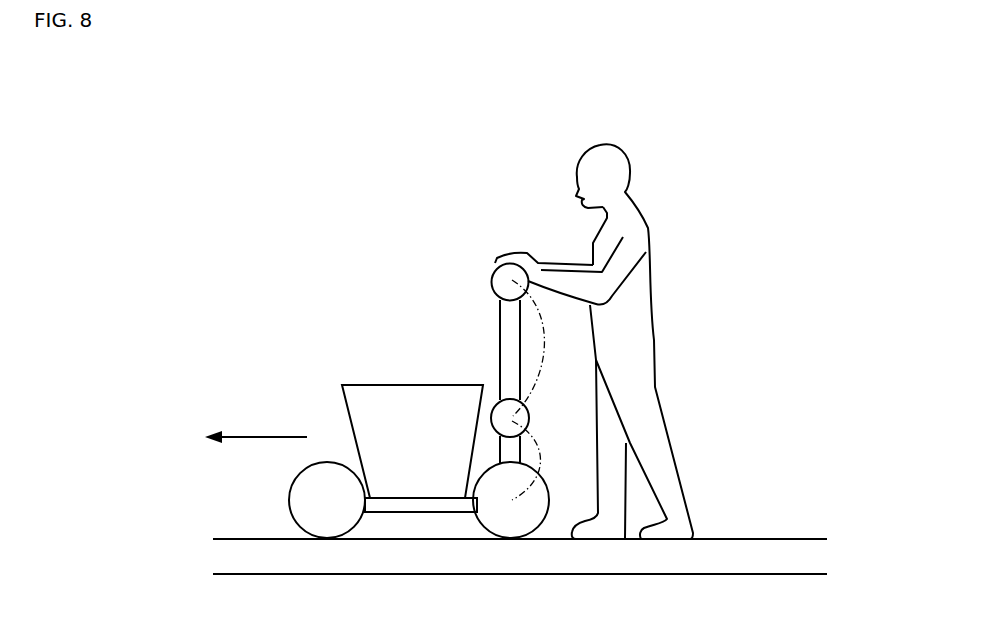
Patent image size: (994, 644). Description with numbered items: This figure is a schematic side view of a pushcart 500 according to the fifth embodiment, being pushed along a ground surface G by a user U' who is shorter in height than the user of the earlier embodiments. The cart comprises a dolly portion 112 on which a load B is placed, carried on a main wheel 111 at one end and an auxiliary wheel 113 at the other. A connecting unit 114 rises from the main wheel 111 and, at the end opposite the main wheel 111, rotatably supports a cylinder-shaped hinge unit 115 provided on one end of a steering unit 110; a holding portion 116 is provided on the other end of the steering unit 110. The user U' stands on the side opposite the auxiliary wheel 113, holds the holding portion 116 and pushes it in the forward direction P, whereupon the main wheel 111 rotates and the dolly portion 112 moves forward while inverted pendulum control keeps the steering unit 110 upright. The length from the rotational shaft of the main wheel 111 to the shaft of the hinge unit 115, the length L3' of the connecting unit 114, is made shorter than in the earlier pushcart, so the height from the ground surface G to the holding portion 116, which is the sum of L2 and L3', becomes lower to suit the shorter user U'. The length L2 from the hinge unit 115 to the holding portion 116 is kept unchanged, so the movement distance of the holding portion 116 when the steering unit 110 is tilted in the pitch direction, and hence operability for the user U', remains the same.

The pushcart 500 is at (327, 272).
The steering unit 110 is at (515, 322).
The main wheel 111 is at (514, 512).
The dolly portion 112 is at (382, 505).
The auxiliary wheel 113 is at (328, 518).
The connecting unit 114 is at (507, 455).
The hinge unit 115 is at (522, 415).
The holding portion 116 is at (500, 278).
The load B is at (372, 398).
The forward direction P is at (258, 434).
The ground surface G is at (580, 553).
The user U' is at (594, 341).
The length L2 is at (537, 348).
The length L3' is at (539, 460).